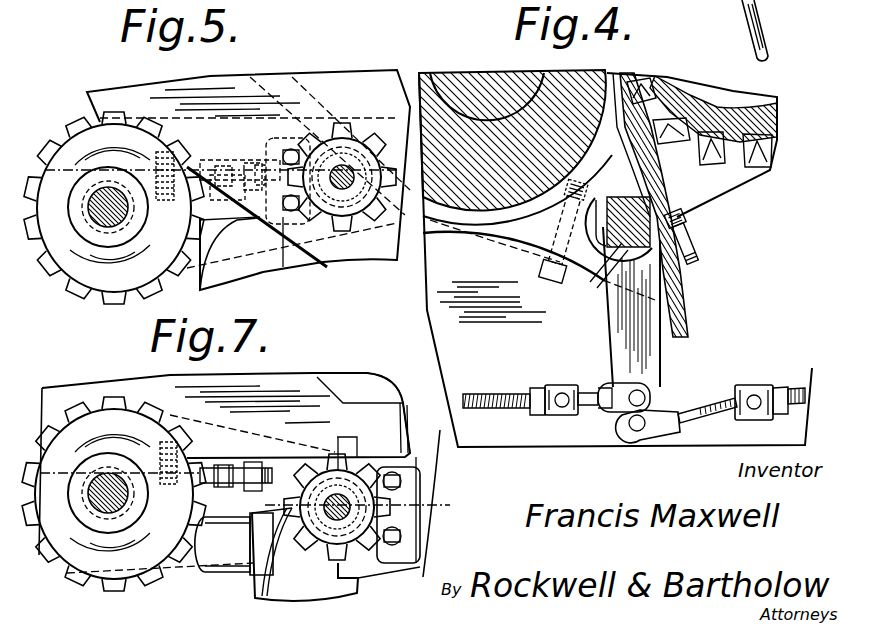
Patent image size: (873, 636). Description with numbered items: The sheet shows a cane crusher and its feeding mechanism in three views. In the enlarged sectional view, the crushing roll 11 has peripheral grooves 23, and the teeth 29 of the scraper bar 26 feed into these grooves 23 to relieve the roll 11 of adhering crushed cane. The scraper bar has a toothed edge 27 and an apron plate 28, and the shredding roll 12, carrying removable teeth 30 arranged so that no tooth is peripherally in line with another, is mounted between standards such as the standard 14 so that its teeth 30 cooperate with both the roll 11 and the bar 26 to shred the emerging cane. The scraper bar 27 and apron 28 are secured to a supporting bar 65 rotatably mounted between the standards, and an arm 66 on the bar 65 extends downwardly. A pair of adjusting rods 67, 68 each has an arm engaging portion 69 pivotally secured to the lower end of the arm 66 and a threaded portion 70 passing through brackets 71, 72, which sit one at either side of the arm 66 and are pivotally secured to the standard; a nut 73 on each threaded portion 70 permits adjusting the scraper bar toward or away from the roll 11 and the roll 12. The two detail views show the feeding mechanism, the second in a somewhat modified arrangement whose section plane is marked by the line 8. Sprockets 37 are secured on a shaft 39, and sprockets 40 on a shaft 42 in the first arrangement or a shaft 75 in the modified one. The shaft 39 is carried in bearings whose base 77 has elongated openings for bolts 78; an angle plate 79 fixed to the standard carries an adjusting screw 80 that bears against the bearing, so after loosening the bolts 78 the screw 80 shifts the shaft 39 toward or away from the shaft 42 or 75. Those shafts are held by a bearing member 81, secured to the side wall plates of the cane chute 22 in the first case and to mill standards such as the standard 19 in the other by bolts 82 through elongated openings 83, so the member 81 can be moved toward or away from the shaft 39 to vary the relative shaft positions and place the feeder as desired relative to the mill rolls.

In FIG. 7, the section line 8- 8 is at (269, 495).
In FIG. 4, the crushing roll 11 is at (548, 80).
In FIG. 4, the shredding roll 12 is at (708, 112).
In FIG. 7, the standard 14 is at (348, 386).
In FIG. 4, the standard 14 is at (812, 368).
In FIG. 7, the standard 19 is at (328, 588).
In FIG. 5, the chute 22 is at (309, 85).
In FIG. 4, the peripheral grooves 23 is at (462, 232).
In FIG. 4, the scraper bar 26 is at (648, 158).
In FIG. 4, the toothed edge 27 is at (661, 83).
In FIG. 4, the apron plate 28 is at (690, 262).
In FIG. 4, the teeth 29 is at (611, 94).
In FIG. 4, the teeth 30 is at (767, 171).
In FIG. 5, the sprocket 37 is at (72, 138).
In FIG. 7, the sprocket 37 is at (93, 420).
In FIG. 5, the shaft 39 is at (100, 220).
In FIG. 7, the shaft 39 is at (102, 512).
In FIG. 5, the sprocket 40 is at (345, 135).
In FIG. 7, the sprocket 40 is at (347, 467).
In FIG. 5, the shaft 42 is at (347, 175).
In FIG. 4, the supporting bar 65 is at (617, 246).
In FIG. 4, the arm 66 is at (656, 368).
In FIG. 4, the adjusting rod 67 is at (706, 411).
In FIG. 4, the adjusting rod 68 is at (587, 396).
In FIG. 4, the arm engaging portion 69 is at (656, 437).
In FIG. 4, the threaded portion 70 is at (500, 406).
In FIG. 4, the bracket 71 is at (566, 412).
In FIG. 4, the bracket 72 is at (760, 418).
In FIG. 4, the nut 73 is at (537, 416).
In FIG. 7, the shaft 75 is at (349, 497).
In FIG. 5, the base 77 is at (101, 198).
In FIG. 7, the base 77 is at (99, 488).
In FIG. 5, the bolts 78 is at (158, 160).
In FIG. 7, the bolts 78 is at (161, 454).
In FIG. 5, the angle plate 79 is at (248, 165).
In FIG. 7, the angle plate 79 is at (251, 463).
In FIG. 5, the adjusting screw 80 is at (222, 167).
In FIG. 7, the adjusting screw 80 is at (222, 466).
In FIG. 5, the bearing member 81 is at (287, 175).
In FIG. 7, the bearing member 81 is at (411, 492).
In FIG. 7, the bolts 82 is at (392, 548).
In FIG. 5, the elongated openings 83 is at (264, 240).
In FIG. 7, the elongated openings 83 is at (403, 548).